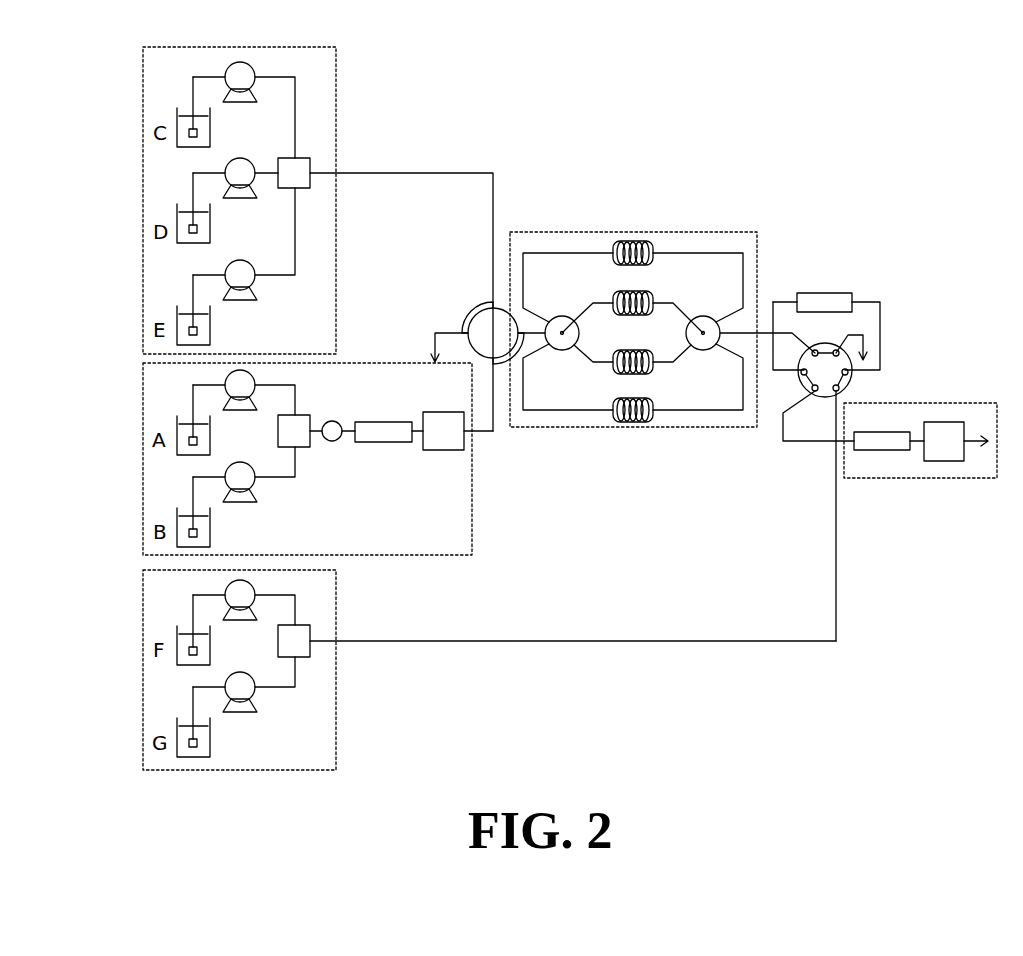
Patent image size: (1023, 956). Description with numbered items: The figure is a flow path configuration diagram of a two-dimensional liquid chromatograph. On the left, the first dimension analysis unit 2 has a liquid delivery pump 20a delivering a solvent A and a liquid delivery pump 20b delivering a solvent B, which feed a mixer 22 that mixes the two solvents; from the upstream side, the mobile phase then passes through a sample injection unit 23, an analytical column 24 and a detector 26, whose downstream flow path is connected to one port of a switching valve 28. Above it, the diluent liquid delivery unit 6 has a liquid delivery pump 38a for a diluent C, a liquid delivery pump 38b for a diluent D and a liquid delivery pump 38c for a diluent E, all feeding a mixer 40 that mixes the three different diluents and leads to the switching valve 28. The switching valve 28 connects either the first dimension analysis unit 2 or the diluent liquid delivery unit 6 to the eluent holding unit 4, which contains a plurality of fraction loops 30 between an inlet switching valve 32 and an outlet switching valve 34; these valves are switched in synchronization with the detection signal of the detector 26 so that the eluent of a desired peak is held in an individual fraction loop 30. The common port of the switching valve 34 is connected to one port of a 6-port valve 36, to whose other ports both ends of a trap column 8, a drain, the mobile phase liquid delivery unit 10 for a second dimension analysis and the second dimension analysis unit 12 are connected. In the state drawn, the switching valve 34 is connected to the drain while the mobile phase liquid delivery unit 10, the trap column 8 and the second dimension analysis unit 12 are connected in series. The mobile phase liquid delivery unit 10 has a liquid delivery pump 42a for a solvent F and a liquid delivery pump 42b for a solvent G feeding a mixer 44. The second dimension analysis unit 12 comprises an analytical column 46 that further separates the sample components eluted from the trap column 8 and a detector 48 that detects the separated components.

The first dimension analysis unit 2 is at (475, 530).
The eluent holding unit 4 is at (690, 232).
The diluent liquid delivery unit 6 is at (340, 74).
The trap column 8 is at (836, 292).
The mobile phase liquid delivery unit for a second dimension analysis 10 is at (336, 737).
The second dimension analysis unit 12 is at (940, 402).
The liquid delivery pump 20a is at (242, 410).
The liquid delivery pump 20b is at (242, 502).
The mixer 22 is at (300, 447).
The sample injection unit 23 is at (338, 439).
The analytical column 24 is at (388, 442).
The detector 26 is at (443, 450).
The switching valve 28 is at (478, 314).
The fraction loops 30 is at (625, 240).
The switching valve 32 is at (560, 318).
The switching valve 34 is at (703, 316).
The 6-port valve 36 is at (856, 383).
The liquid delivery pump 38a is at (242, 102).
The liquid delivery pump 38b is at (242, 198).
The liquid delivery pump 38c is at (242, 300).
The mixer 40 is at (300, 158).
The liquid delivery pump 42a is at (242, 620).
The liquid delivery pump 42b is at (242, 712).
The mixer 44 is at (300, 657).
The analytical column 46 is at (880, 452).
The detector 48 is at (945, 463).